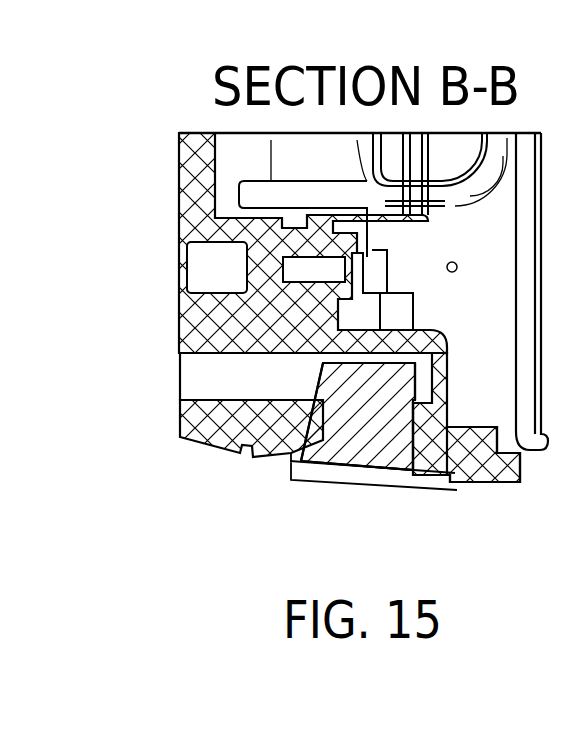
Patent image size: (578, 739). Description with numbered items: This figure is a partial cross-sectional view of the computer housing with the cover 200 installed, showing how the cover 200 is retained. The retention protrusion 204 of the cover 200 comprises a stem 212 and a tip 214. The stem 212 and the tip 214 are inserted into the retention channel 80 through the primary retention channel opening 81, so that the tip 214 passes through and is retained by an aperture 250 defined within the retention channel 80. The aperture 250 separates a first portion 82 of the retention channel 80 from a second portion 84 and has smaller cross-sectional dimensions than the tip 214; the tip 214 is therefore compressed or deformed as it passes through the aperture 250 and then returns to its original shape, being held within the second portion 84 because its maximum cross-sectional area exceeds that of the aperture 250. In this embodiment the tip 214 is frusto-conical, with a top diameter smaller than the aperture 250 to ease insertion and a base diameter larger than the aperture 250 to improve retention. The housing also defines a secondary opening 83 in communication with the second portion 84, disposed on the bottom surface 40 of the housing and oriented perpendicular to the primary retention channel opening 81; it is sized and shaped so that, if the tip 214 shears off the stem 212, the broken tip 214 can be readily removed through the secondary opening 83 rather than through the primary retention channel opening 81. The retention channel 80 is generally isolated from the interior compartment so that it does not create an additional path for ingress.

The bottom surface 40 is at (183, 183).
The secondary opening 83 is at (178, 370).
The second portion 84 is at (204, 395).
The retention channel 80 is at (353, 436).
The primary retention channel opening 81 is at (340, 448).
The retention protrusion 204 is at (360, 431).
The stem 212 is at (373, 428).
The tip 214 is at (410, 387).
The aperture 250 is at (418, 412).
The first portion 82 is at (401, 453).
The cover 200 is at (305, 478).